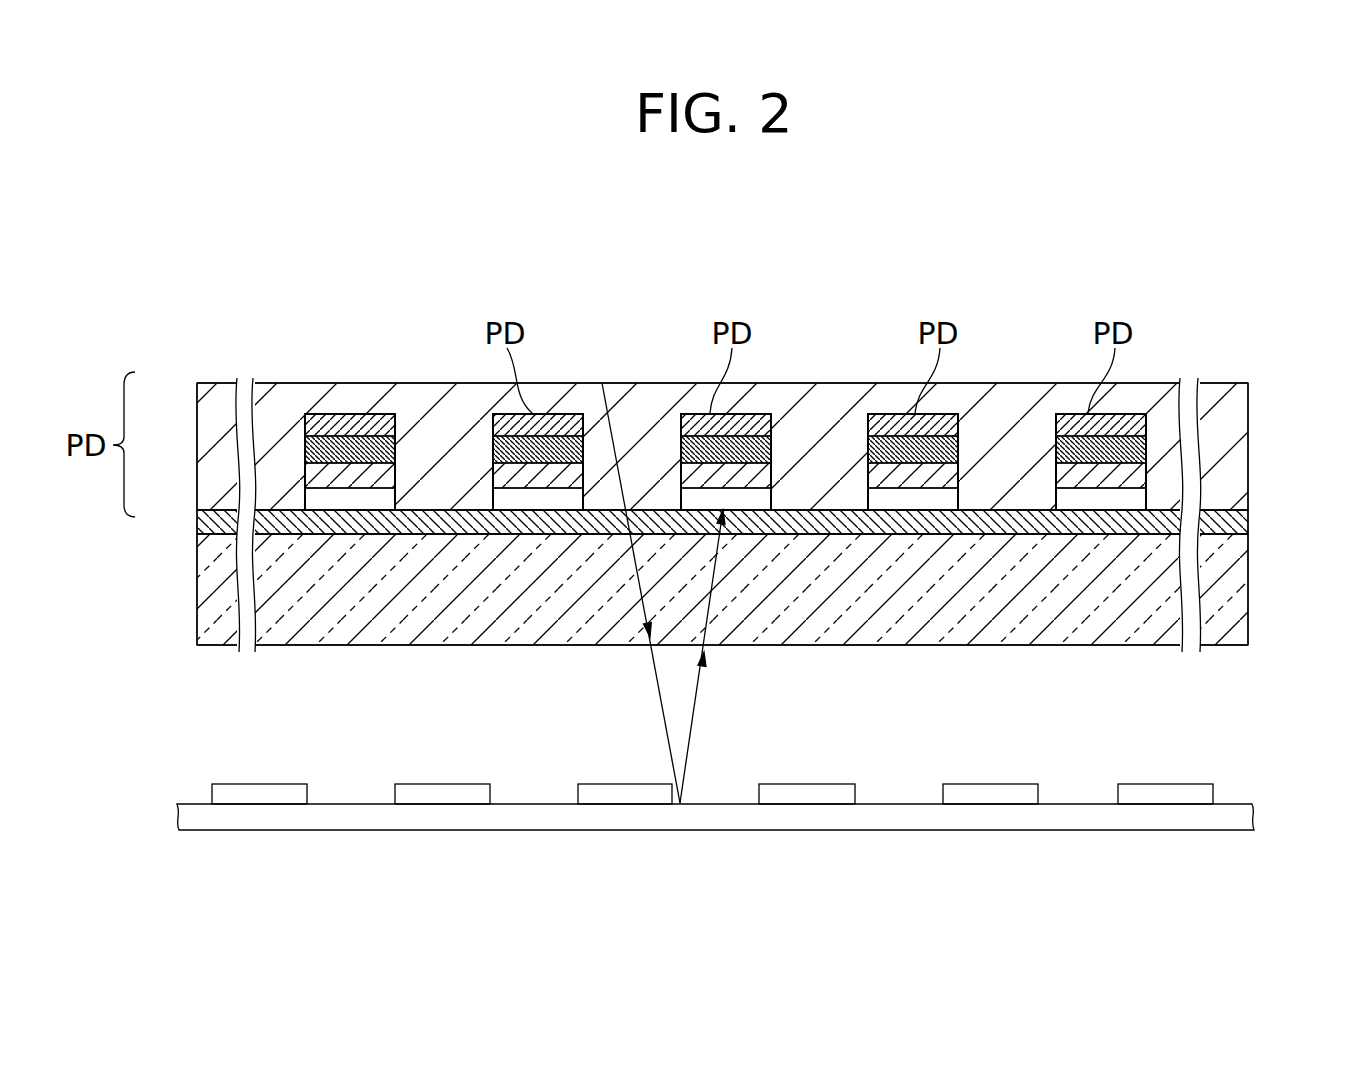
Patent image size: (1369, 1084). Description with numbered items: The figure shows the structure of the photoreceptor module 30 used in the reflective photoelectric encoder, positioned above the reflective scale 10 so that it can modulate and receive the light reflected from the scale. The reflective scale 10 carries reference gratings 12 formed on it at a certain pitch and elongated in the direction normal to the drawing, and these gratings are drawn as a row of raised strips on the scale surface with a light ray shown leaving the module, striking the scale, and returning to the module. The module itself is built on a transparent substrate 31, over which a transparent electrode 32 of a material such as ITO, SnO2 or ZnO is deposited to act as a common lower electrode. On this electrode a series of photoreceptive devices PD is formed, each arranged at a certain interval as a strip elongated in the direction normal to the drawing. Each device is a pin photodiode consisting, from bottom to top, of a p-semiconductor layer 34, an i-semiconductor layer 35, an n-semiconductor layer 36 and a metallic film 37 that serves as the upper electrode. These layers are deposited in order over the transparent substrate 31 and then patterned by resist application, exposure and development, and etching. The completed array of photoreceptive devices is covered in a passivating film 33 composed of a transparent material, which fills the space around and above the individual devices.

The reflective scale 10 is at (553, 823).
The reference gratings 12 is at (440, 790).
The photoreceptor module 30 is at (1027, 312).
The transparent substrate 31 is at (1240, 580).
The transparent electrode 32 is at (1240, 520).
The passivating film 33 is at (1240, 445).
The p-semiconductor layer 34 is at (303, 499).
The i-semiconductor layer 35 is at (303, 477).
The n-semiconductor layer 36 is at (303, 447).
The metallic film 37 is at (303, 425).